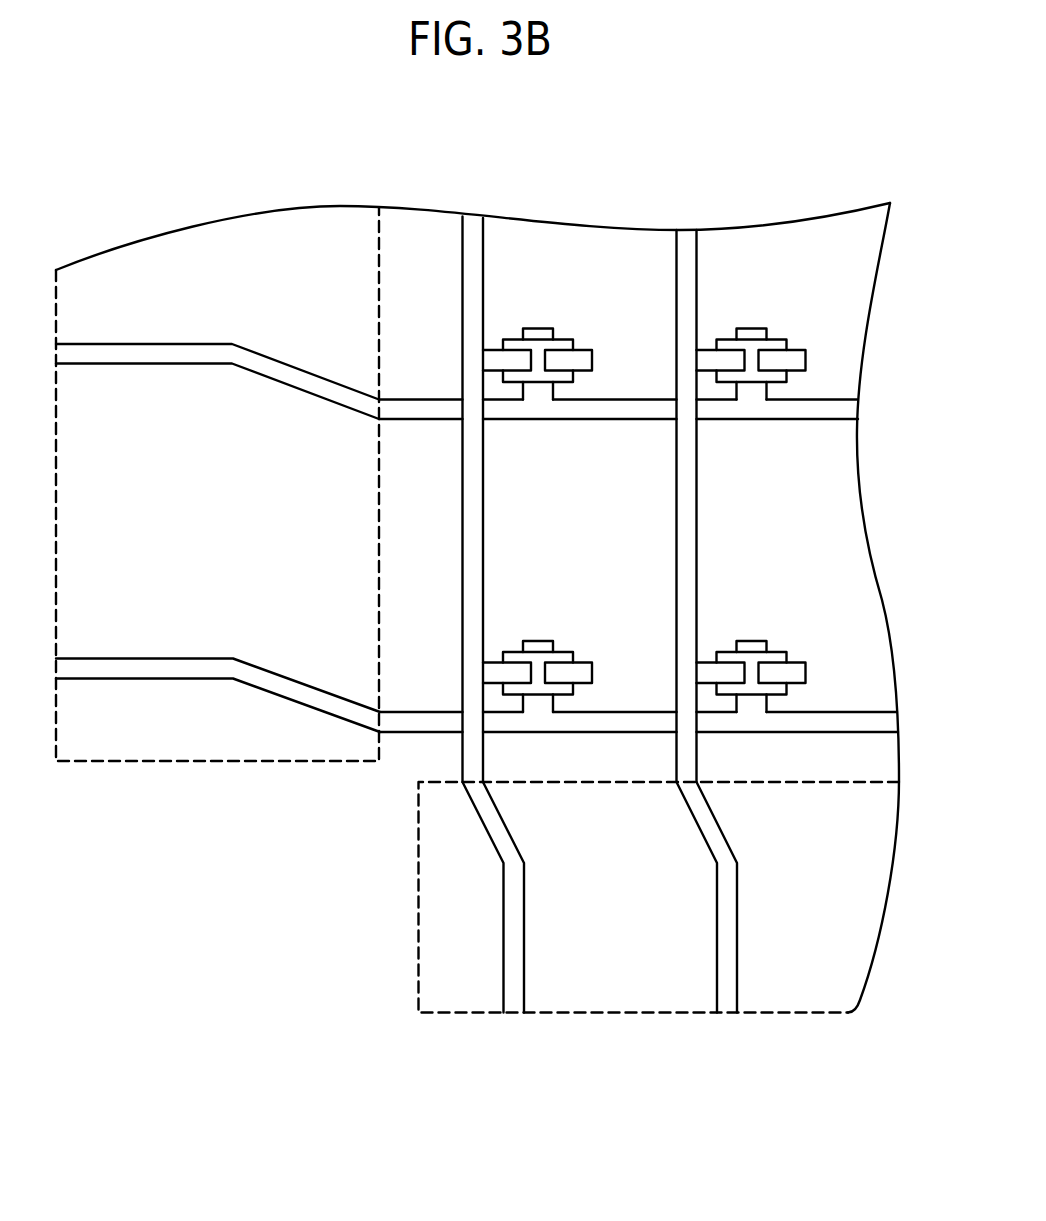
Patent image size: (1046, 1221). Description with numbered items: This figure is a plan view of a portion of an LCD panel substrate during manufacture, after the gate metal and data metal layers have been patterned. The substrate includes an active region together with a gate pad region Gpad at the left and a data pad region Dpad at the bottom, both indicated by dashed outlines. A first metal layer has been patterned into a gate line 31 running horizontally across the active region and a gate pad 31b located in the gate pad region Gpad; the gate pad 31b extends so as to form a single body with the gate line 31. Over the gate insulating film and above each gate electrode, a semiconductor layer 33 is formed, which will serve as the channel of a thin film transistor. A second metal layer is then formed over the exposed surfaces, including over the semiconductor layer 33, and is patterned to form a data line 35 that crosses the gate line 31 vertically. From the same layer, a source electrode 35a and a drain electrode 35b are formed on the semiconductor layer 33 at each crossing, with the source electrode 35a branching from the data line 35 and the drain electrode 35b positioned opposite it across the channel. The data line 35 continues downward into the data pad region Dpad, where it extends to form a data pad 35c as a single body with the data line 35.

The gate line 31 is at (847, 410).
The gate pad 31b is at (145, 352).
The semiconductor layer 33 is at (748, 342).
The data line 35 is at (685, 240).
The source electrode 35a is at (705, 360).
The drain electrode 35b is at (802, 360).
The data pad 35c is at (728, 950).
The gate pad region Gpad is at (193, 763).
The data pad region Dpad is at (418, 894).